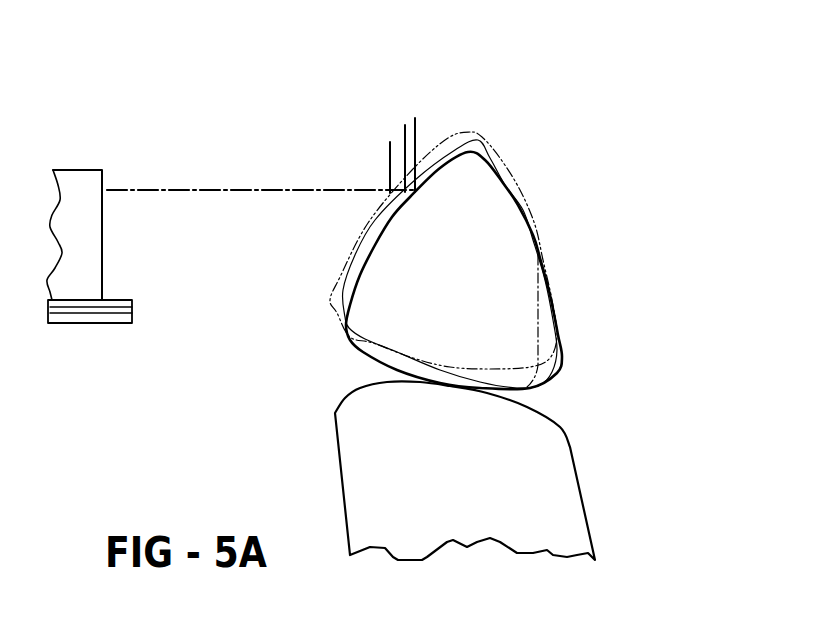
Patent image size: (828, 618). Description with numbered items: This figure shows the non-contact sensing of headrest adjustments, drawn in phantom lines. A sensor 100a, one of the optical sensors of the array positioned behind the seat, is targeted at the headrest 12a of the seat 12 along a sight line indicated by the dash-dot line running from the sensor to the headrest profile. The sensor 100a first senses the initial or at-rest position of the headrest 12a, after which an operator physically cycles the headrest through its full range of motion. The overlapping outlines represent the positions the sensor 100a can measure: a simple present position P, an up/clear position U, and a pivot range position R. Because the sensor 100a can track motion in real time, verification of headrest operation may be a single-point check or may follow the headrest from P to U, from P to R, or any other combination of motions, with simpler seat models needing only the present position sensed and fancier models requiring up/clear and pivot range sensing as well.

The sensor 100a is at (98, 182).
The seat 12 is at (583, 492).
The headrest 12a is at (528, 297).
The present position P is at (416, 122).
The pivot range position R is at (389, 162).
The up/clear position U is at (404, 130).